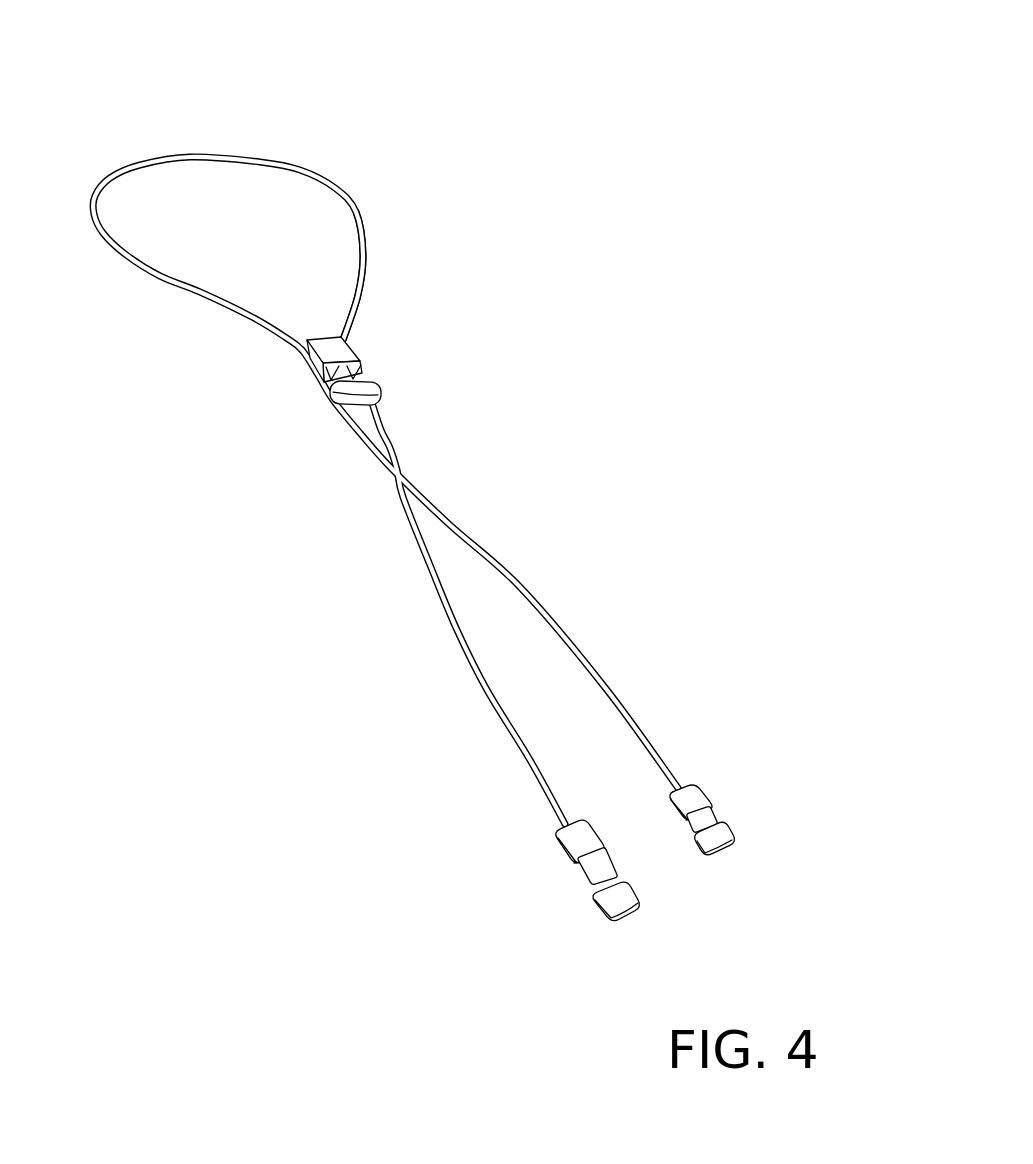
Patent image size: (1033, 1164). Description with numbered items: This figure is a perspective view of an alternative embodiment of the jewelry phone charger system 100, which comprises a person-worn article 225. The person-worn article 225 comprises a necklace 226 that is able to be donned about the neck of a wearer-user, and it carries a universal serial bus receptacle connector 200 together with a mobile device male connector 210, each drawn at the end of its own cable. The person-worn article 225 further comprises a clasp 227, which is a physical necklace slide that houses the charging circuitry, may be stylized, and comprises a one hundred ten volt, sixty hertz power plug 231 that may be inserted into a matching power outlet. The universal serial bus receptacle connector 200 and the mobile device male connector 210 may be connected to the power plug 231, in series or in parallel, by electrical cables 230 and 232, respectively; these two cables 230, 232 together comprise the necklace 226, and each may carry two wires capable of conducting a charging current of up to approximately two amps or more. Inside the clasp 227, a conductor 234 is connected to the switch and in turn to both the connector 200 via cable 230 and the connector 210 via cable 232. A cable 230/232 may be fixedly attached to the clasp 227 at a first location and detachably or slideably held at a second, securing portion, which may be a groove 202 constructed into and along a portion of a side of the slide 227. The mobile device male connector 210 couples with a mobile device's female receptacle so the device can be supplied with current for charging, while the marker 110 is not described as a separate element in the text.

The jewelry phone charger system 100 is at (555, 103).
The retainer 110 is at (590, 133).
The universal serial bus receptacle connector 200 is at (585, 873).
The mobile device male connector 210 is at (705, 807).
The groove 202 is at (278, 370).
The person-worn article 225 is at (345, 193).
The necklace 226 is at (367, 233).
The clasp 227 is at (532, 333).
The electrical cable 230 is at (209, 437).
The 110 volt, 60 hertz power plug 231 is at (457, 293).
The electrical cable 232 is at (750, 557).
The conductor 234 is at (380, 387).